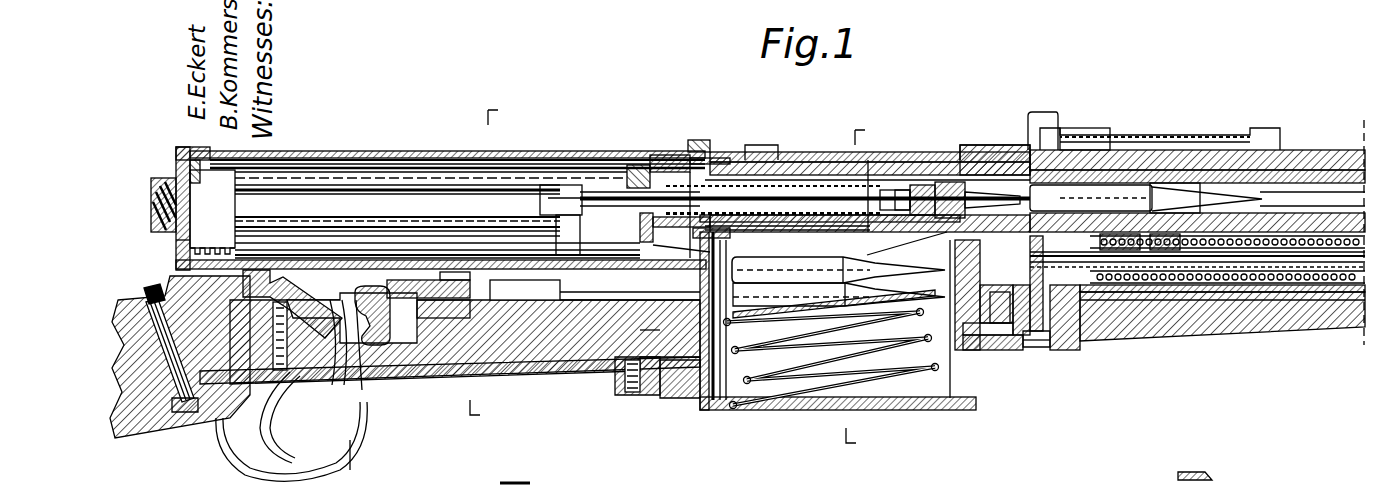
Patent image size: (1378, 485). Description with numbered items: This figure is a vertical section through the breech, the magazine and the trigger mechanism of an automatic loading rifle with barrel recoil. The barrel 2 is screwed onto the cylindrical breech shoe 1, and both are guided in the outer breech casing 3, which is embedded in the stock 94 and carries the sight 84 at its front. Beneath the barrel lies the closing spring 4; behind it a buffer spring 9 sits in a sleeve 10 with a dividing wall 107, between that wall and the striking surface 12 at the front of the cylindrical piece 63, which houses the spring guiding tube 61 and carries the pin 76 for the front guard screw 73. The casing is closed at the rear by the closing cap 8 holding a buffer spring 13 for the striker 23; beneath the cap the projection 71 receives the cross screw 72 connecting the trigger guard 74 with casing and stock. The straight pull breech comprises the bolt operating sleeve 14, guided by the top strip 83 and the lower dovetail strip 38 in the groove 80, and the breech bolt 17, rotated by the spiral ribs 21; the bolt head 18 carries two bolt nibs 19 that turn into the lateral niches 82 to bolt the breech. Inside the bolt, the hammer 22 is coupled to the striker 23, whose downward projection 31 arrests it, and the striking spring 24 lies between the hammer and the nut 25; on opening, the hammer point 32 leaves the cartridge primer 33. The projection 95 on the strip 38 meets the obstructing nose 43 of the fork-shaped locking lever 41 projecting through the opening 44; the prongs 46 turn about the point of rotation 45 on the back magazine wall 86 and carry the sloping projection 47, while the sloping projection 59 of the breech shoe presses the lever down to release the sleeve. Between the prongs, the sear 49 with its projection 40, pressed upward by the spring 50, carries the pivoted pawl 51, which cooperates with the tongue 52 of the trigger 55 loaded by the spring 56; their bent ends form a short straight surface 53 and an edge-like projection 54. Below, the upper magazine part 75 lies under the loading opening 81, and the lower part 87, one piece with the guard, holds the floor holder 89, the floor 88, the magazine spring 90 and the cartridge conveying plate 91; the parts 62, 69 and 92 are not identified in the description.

The breech shoe 1 is at (975, 145).
The barrel 2 is at (1318, 176).
The breech casing 3 is at (390, 150).
The closing spring 4 is at (1230, 284).
The closing cap 8 is at (178, 256).
The buffer spring 9 is at (1140, 292).
The sleeve 10 is at (245, 172).
The striking surface 12 is at (1118, 292).
The buffer spring 13 is at (178, 212).
The bolt operating sleeve 14 is at (760, 152).
The breech bolt 17 is at (945, 182).
The bolt head 18 is at (1000, 350).
The bolt nibs 19 is at (1075, 130).
The spiral ribs 21 is at (885, 190).
The hammer 22 is at (980, 192).
The striker 23 is at (552, 185).
The striking spring 24 is at (805, 185).
The nut 25 is at (640, 155).
The striker projection 31 is at (566, 230).
The hammer point 32 is at (1000, 160).
The cartridge primer 33 is at (1146, 198).
The lower guiding strip 38 is at (830, 235).
The sear projection 40 is at (590, 255).
The locking lever 41 is at (525, 300).
The obstructing nose 43 is at (500, 280).
The opening 44 is at (540, 345).
The point of rotation 45 is at (625, 350).
The fork prongs 46 is at (580, 305).
The sloping projection 47 is at (600, 340).
The sear 49 is at (420, 300).
The sear spring 50 is at (640, 360).
The pawl 51 is at (372, 286).
The trigger tongue 52 is at (320, 300).
The straight surface 53 is at (335, 340).
The edge projection 54 is at (350, 405).
The trigger 55 is at (270, 425).
The trigger spring 56 is at (262, 270).
The sloping projection 59 is at (650, 260).
The spring guiding tube 61 is at (1295, 255).
The piston head 62 is at (1065, 320).
The cylindrical piece 63 is at (1090, 292).
The spring guide 69 is at (1338, 268).
The projection 71 is at (176, 262).
The cross screw 72 is at (148, 292).
The front guard screw 73 is at (1043, 347).
The trigger guard 74 is at (368, 432).
The cartridge magazine upper part 75 is at (948, 330).
The pin 76 is at (1100, 232).
The longitudinal groove 80 is at (452, 272).
The loading opening 81 is at (775, 152).
The lateral niches 82 is at (1040, 128).
The top guiding strip 83 is at (920, 185).
The sight 84 is at (1120, 135).
The back magazine wall 86 is at (642, 375).
The magazine lower part 87 is at (968, 350).
The magazine floor 88 is at (762, 410).
The magazine floor holder 89 is at (660, 398).
The magazine spring 90 is at (870, 380).
The cartridge conveying plate 91 is at (712, 410).
The barrel jacket 92 is at (1290, 160).
The stock 94 is at (125, 430).
The strip projection 95 is at (834, 274).
The dividing wall 107 is at (1165, 292).